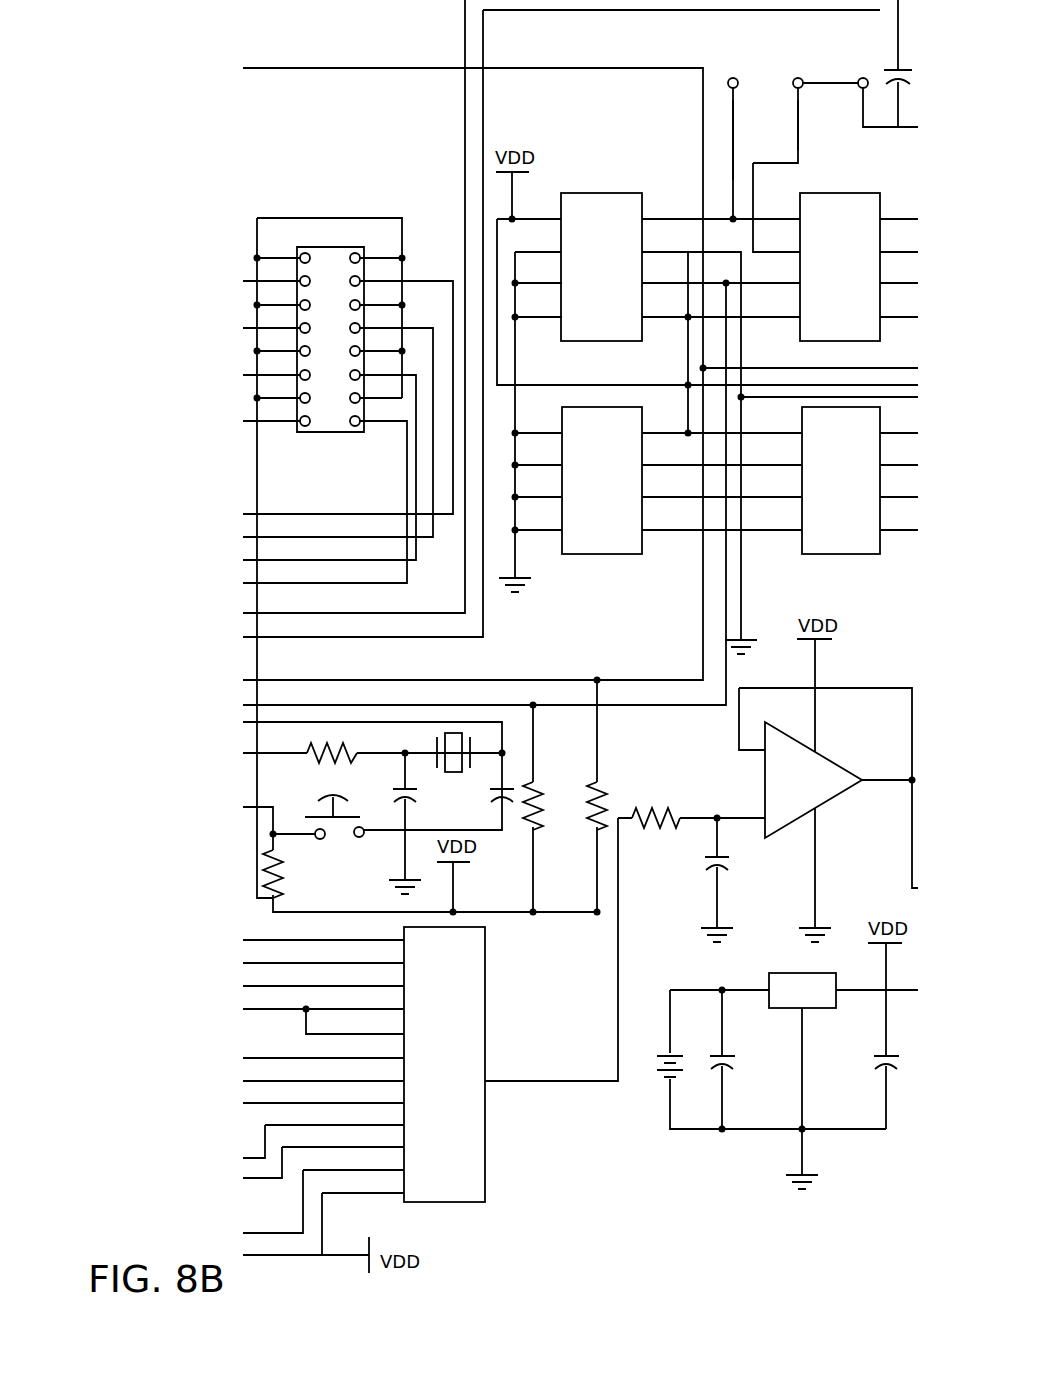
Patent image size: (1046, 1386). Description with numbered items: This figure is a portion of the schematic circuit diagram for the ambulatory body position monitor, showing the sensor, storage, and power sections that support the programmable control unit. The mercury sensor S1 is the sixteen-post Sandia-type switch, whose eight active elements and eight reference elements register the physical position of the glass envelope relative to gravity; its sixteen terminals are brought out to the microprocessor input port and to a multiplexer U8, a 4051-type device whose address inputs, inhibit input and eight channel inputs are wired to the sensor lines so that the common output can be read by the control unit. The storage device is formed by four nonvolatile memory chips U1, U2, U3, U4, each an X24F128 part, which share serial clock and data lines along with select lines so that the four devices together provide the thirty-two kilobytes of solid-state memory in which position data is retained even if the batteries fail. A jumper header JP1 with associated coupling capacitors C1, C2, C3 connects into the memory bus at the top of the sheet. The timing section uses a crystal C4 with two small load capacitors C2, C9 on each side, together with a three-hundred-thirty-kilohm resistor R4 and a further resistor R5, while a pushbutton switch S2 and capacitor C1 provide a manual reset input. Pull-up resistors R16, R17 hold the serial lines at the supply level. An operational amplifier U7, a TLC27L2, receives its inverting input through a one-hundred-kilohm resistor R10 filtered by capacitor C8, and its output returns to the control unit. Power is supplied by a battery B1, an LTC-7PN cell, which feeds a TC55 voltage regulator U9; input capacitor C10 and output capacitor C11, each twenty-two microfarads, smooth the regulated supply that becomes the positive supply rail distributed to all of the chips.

The mercury sensor switch S1 is at (348, 400).
The X24F128 memory IC U1 is at (605, 271).
The X24F128 memory IC U2 is at (836, 269).
The X24F128 memory IC U3 is at (605, 497).
The X24F128 memory IC U4 is at (838, 497).
The jumper header JP1 is at (823, 132).
The capacitor .01 C1 is at (901, 64).
The capacitor C2 is at (812, 125).
The capacitor C3 is at (747, 140).
The crystal/capacitor C4 is at (453, 757).
The capacitor 15 C9 is at (493, 792).
The capacitor .01 C8 is at (696, 869).
The capacitor 22uF/6.3V C10 is at (706, 1098).
The capacitor 22uF/6.3V C11 is at (879, 1098).
The resistor 330K R4 is at (331, 762).
The resistor 330K R5 is at (302, 876).
The resistor 100K R10 is at (667, 809).
The resistor 330K R16 is at (510, 839).
The resistor 330K R17 is at (575, 839).
The switch S2 is at (318, 843).
The TLC27L2 operational amplifier U7 is at (829, 755).
The 4051 multiplexer U8 is at (442, 1074).
The TC55 voltage regulator U9 is at (804, 1004).
The battery LTC-7PN B1 is at (627, 1074).